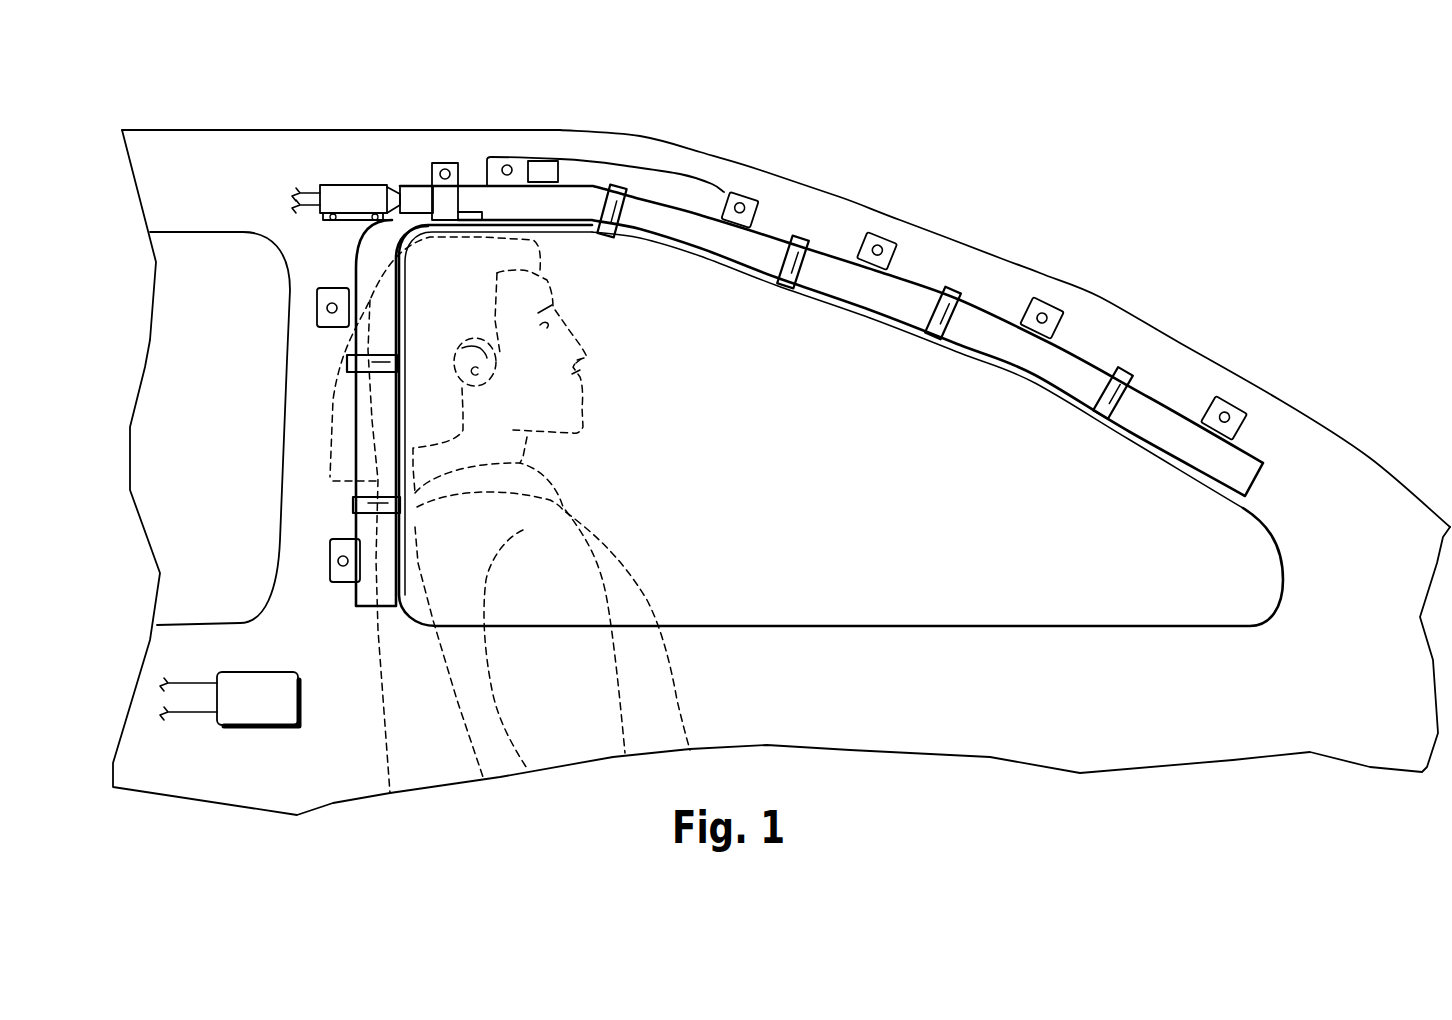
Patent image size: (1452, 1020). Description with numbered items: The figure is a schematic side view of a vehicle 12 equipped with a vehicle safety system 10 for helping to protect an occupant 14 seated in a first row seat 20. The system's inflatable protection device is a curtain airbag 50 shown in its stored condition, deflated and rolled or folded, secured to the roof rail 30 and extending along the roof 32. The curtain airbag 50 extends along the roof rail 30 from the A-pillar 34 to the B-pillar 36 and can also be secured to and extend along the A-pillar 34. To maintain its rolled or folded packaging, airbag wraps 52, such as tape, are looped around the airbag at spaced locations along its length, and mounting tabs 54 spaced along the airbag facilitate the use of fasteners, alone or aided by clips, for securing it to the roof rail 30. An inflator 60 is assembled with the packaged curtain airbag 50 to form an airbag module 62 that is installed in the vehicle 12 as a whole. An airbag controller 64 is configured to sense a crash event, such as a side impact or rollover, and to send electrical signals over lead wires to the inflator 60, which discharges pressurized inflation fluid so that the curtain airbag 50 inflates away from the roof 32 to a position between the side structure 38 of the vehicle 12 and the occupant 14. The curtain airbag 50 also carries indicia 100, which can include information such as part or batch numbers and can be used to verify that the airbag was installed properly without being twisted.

The vehicle safety system 10 is at (804, 110).
The vehicle 12 is at (1172, 79).
The occupant 14 is at (600, 542).
The first row seat 20 is at (453, 745).
The roof rail 30 is at (473, 157).
The roof 32 is at (307, 128).
The A-pillar 34 is at (1010, 278).
The B-pillar 36 is at (300, 407).
The side structure 38 is at (324, 596).
The curtain airbag 50 is at (878, 283).
The airbag wraps 52 is at (613, 228).
The mounting tabs 54 is at (640, 180).
The inflator 60 is at (345, 195).
The airbag module 62 is at (801, 185).
The airbag controller 64 is at (248, 705).
The indicia 100 is at (545, 177).